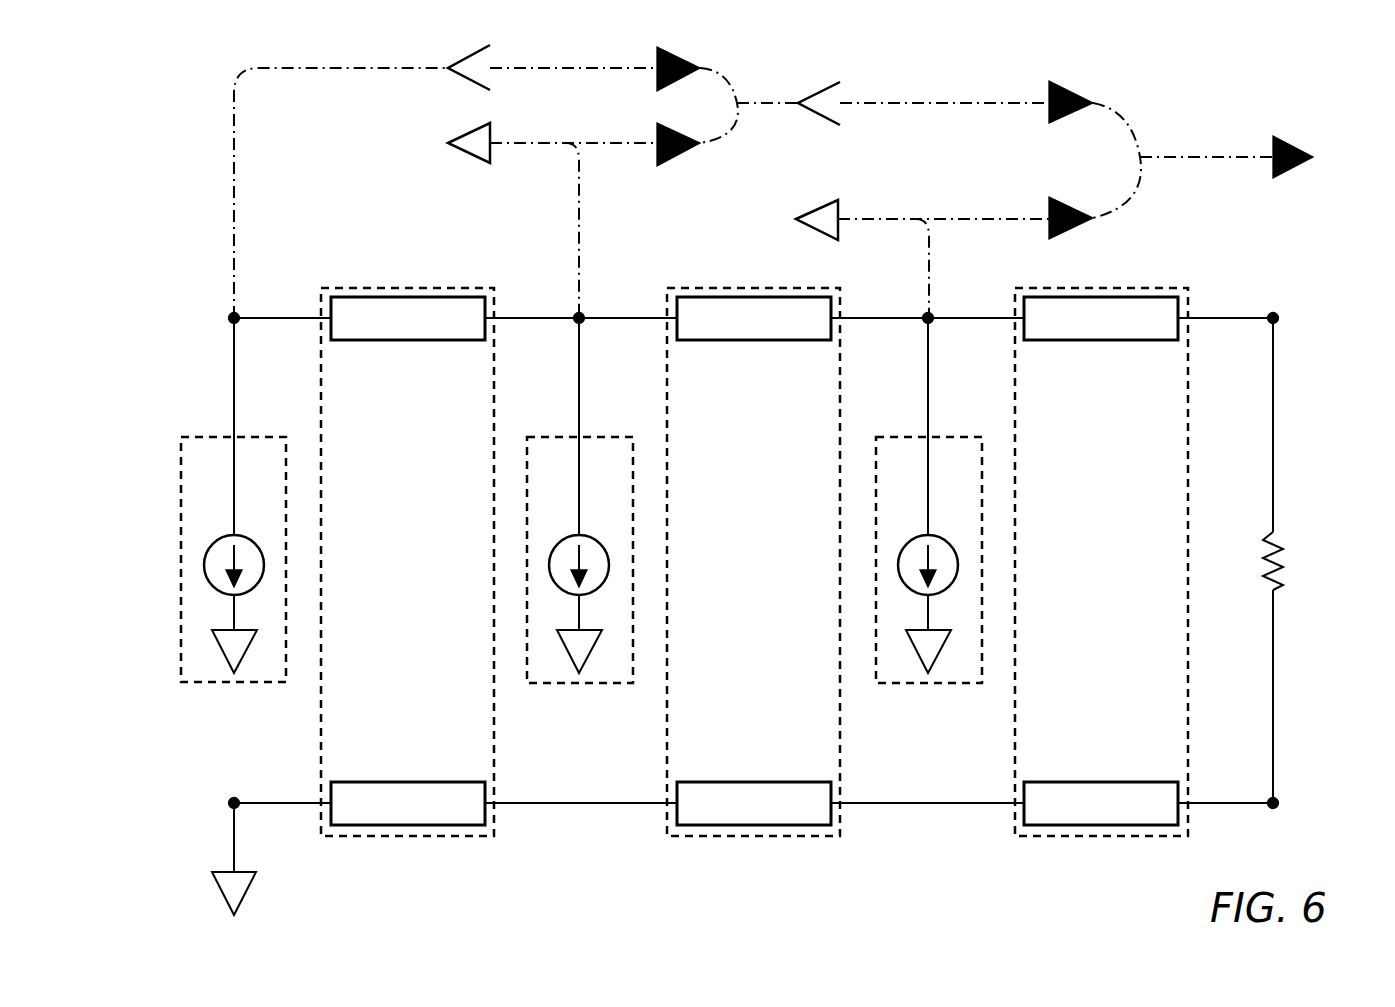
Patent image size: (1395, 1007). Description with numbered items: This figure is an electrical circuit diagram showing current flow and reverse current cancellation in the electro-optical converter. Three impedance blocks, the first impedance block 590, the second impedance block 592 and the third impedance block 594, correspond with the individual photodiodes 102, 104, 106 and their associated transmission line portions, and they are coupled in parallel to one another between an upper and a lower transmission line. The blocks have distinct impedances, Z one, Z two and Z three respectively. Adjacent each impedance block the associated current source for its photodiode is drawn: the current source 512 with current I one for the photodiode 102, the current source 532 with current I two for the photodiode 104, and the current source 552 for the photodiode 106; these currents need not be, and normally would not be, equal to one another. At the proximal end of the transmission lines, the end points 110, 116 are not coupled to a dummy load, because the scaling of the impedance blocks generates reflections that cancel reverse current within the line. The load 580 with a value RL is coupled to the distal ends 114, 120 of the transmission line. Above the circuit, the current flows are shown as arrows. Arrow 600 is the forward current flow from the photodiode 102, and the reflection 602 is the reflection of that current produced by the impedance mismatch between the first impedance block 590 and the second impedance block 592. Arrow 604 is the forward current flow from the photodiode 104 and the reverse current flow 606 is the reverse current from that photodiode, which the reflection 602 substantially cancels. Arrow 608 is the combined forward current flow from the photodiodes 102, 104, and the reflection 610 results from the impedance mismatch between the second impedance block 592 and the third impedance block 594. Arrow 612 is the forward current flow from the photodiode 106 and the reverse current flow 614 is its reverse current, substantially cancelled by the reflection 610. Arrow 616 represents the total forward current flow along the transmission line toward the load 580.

The photodiode 102 is at (224, 523).
The photodiode 104 is at (571, 523).
The photodiode 106 is at (927, 523).
The end point 110 is at (205, 314).
The distal end 114 is at (1303, 314).
The proximal end 116 is at (205, 799).
The distal end 120 is at (1303, 799).
The current source 512 is at (240, 536).
The current source 532 is at (585, 536).
The current source 552 is at (934, 536).
The load 580 is at (1284, 562).
The first impedance block 590 is at (407, 562).
The second impedance block 592 is at (753, 562).
The third impedance block 594 is at (1101, 562).
The arrow 600 is at (680, 58).
The reflection 602 is at (470, 56).
The arrow 604 is at (680, 156).
The reverse current flow 606 is at (470, 156).
The arrow 608 is at (1070, 94).
The reflection 610 is at (824, 116).
The arrow 612 is at (1070, 190).
The reverse current flow 614 is at (818, 230).
The arrow 616 is at (1290, 168).